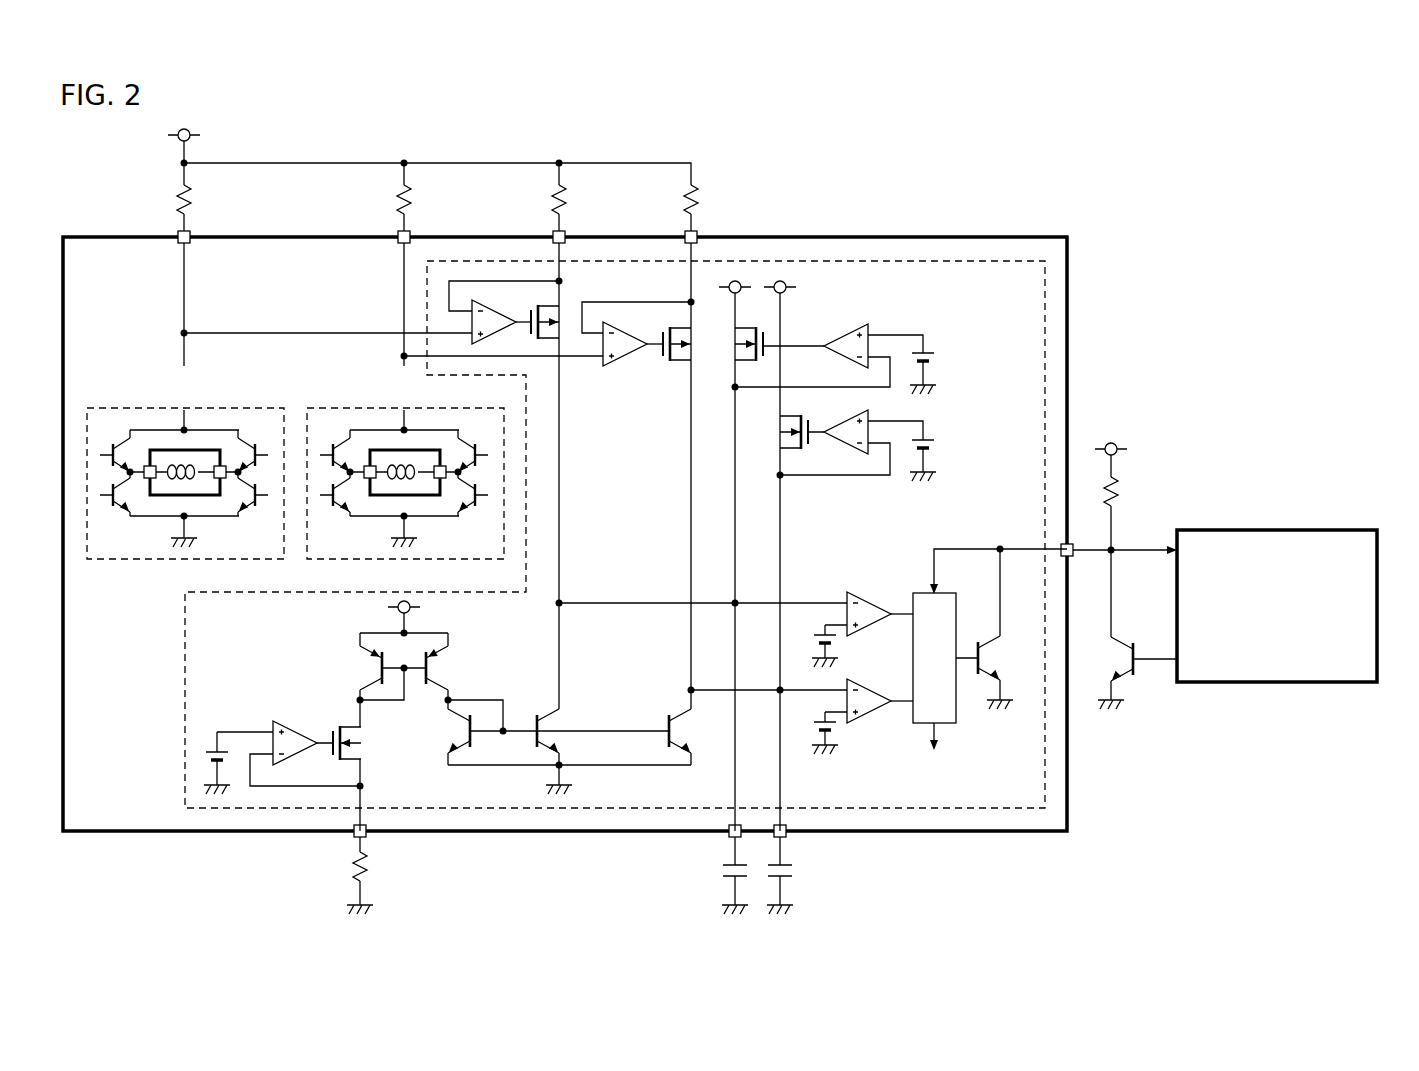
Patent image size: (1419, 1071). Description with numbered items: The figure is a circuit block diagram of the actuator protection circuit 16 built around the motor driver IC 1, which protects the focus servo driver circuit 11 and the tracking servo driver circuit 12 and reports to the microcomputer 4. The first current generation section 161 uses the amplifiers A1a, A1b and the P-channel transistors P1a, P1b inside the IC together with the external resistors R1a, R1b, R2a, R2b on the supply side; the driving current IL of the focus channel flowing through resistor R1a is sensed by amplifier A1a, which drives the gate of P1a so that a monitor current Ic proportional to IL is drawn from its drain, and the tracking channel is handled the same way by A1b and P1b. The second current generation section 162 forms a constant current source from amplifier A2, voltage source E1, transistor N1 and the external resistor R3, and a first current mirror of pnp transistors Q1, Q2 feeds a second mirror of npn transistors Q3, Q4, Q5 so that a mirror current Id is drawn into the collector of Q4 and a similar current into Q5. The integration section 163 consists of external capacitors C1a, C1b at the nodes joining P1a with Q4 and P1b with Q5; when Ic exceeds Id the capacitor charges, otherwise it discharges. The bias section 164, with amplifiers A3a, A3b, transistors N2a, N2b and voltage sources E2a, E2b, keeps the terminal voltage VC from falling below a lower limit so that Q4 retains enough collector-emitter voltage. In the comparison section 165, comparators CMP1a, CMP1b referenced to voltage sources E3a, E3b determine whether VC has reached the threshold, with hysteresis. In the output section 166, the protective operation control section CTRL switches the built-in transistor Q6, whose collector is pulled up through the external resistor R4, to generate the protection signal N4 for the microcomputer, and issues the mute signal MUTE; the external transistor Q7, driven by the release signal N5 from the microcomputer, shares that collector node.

The motor driver IC 1 is at (918, 237).
The microcomputer 4 is at (1274, 530).
The focus servo driver circuit 11 is at (134, 408).
The tracking servo driver circuit 12 is at (354, 408).
The actuator protection circuit 16 is at (596, 534).
The first current generation section 161 is at (572, 353).
The second current generation section 162 is at (464, 697).
The integration section 163 is at (773, 800).
The bias section 164 is at (861, 385).
The comparison section 165 is at (735, 629).
The output section 166 is at (987, 660).
The resistor R1a is at (213, 211).
The resistor R1b is at (433, 211).
The resistor R2a is at (588, 211).
The resistor R2b is at (720, 211).
The resistor R3 is at (380, 875).
The resistor R4 is at (1128, 540).
The capacitor C1a is at (711, 875).
The capacitor C1b is at (806, 875).
The amplifier A1a is at (494, 308).
The amplifier A1b is at (623, 332).
The amplifier A2 is at (282, 723).
The amplifier A3a is at (834, 324).
The amplifier A3b is at (834, 412).
The P-channel field effect transistor P1a is at (566, 306).
The P-channel field effect transistor P1b is at (660, 366).
The N-channel field effect transistor N1 is at (339, 726).
The N-channel field effect transistor N2a is at (774, 358).
The N-channel field effect transistor N2b is at (810, 450).
The pnp bipolar transistor Q1 is at (352, 686).
The pnp bipolar transistor Q2 is at (453, 677).
The npn bipolar transistor Q3 is at (440, 737).
The npn bipolar transistor Q4 is at (546, 709).
The npn bipolar transistor Q5 is at (705, 727).
The npn bipolar transistor Q6 is at (996, 629).
The npn bipolar transistor Q7 is at (1128, 673).
The direct current voltage source E1 is at (208, 745).
The direct current voltage source E2a is at (928, 364).
The direct current voltage source E2b is at (928, 451).
The direct current voltage source E3a is at (808, 642).
The direct current voltage source E3b is at (808, 729).
The comparator CMP1a is at (883, 586).
The comparator CMP1b is at (883, 673).
The protection signal N4 is at (1030, 540).
The release signal N5 is at (1168, 672).
The terminal voltage VC is at (743, 596).
The driving current IL is at (177, 278).
The monitor current Ic is at (569, 563).
The mirror current Id is at (569, 627).
The protective operation control section CTRL is at (998, 570).
The mute signal MUTE is at (933, 748).